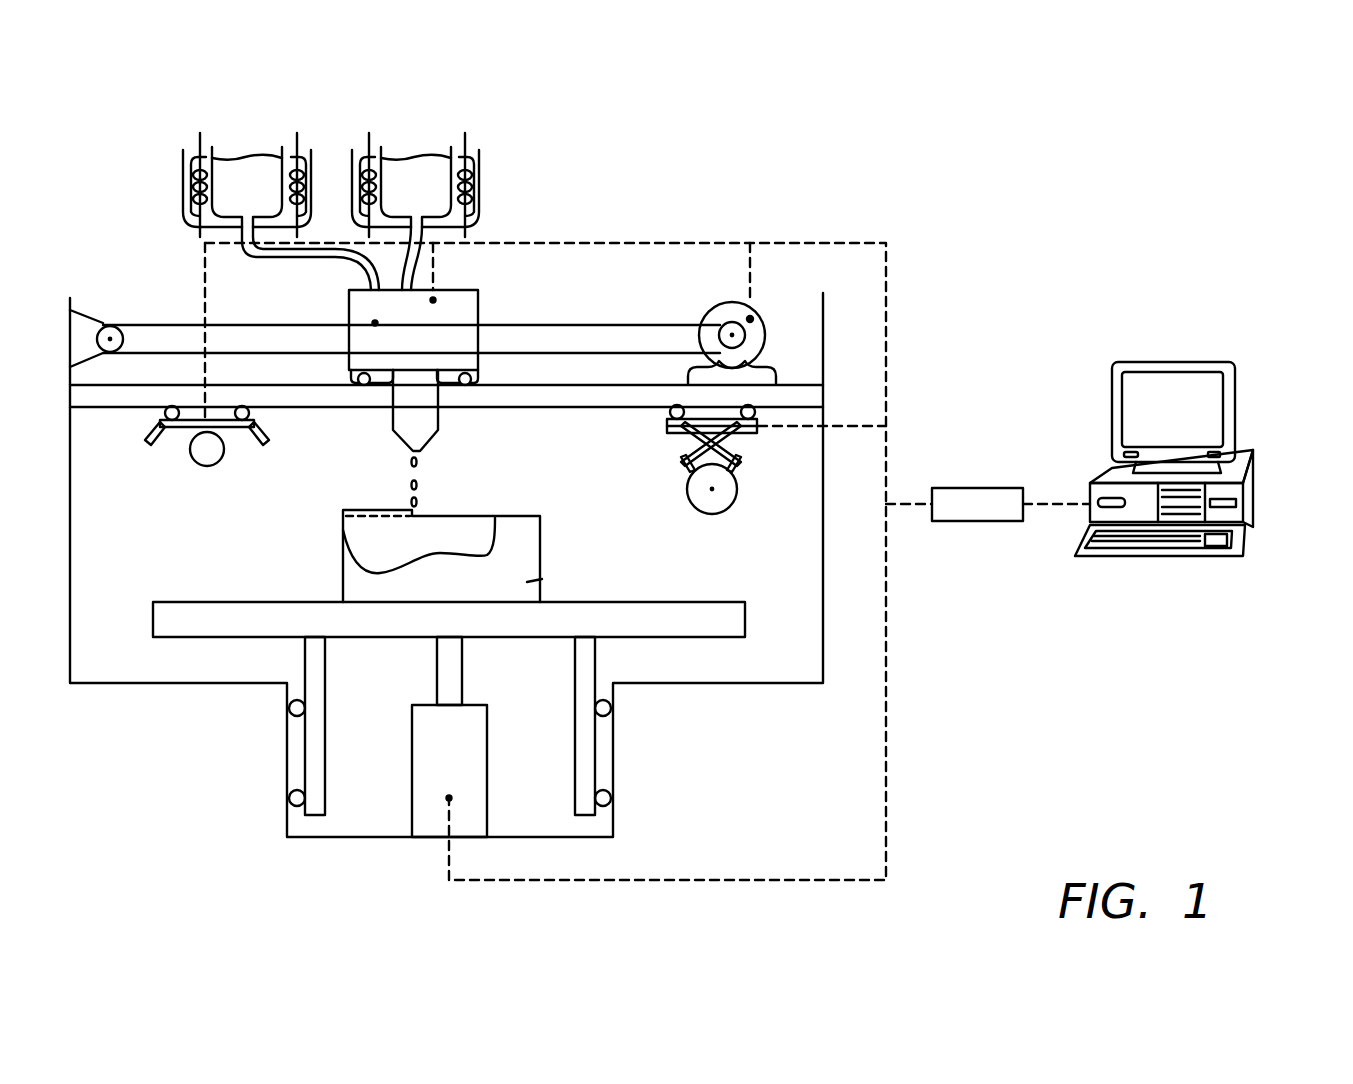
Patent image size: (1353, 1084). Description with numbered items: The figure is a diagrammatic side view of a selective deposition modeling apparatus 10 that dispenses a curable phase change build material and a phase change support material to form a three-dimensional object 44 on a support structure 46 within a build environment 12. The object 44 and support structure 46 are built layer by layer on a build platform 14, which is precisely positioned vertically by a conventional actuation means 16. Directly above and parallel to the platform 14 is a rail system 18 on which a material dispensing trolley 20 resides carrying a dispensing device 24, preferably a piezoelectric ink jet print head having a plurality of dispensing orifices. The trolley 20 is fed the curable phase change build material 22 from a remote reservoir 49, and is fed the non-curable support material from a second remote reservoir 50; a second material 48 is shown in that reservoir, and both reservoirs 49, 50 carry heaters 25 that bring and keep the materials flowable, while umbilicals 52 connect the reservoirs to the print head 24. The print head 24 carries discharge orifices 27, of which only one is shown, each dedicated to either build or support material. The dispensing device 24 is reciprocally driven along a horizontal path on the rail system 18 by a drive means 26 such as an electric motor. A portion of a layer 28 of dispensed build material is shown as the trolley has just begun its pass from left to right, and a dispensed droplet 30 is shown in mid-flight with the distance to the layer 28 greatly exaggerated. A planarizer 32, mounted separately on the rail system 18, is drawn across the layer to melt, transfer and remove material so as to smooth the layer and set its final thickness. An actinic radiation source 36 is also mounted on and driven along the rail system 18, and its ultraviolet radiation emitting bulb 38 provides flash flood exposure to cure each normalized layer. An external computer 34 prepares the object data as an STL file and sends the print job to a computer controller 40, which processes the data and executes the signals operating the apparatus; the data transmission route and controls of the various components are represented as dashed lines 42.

The SDM apparatus 10 is at (90, 243).
The build environment 12 is at (474, 527).
The build platform 14 is at (188, 601).
The actuation means 16 is at (430, 822).
The rail system 18 is at (103, 408).
The material dispensing trolley 20 is at (418, 372).
The curable phase change build material 22 is at (216, 167).
The dispensing device 24 is at (397, 409).
The heaters 25 is at (198, 140).
The drive means 26 is at (723, 303).
The discharge orifices 27 is at (409, 459).
The layer 28 is at (378, 510).
The dispensed droplet 30 is at (418, 463).
The planarizer 32 is at (737, 505).
The external computer 34 is at (1256, 503).
The actinic radiation source 36 is at (152, 488).
The ultraviolet radiation emitting bulb 38 is at (207, 461).
The computer controller 40 is at (977, 488).
The data transmission route and controls 42 is at (203, 276).
The three-dimensional object 44 is at (482, 525).
The support structure 46 is at (542, 579).
The second material hopper 48 is at (452, 167).
The remote reservoir 49 is at (181, 183).
The remote reservoir 50 is at (479, 180).
The umbilicals 52 is at (307, 255).